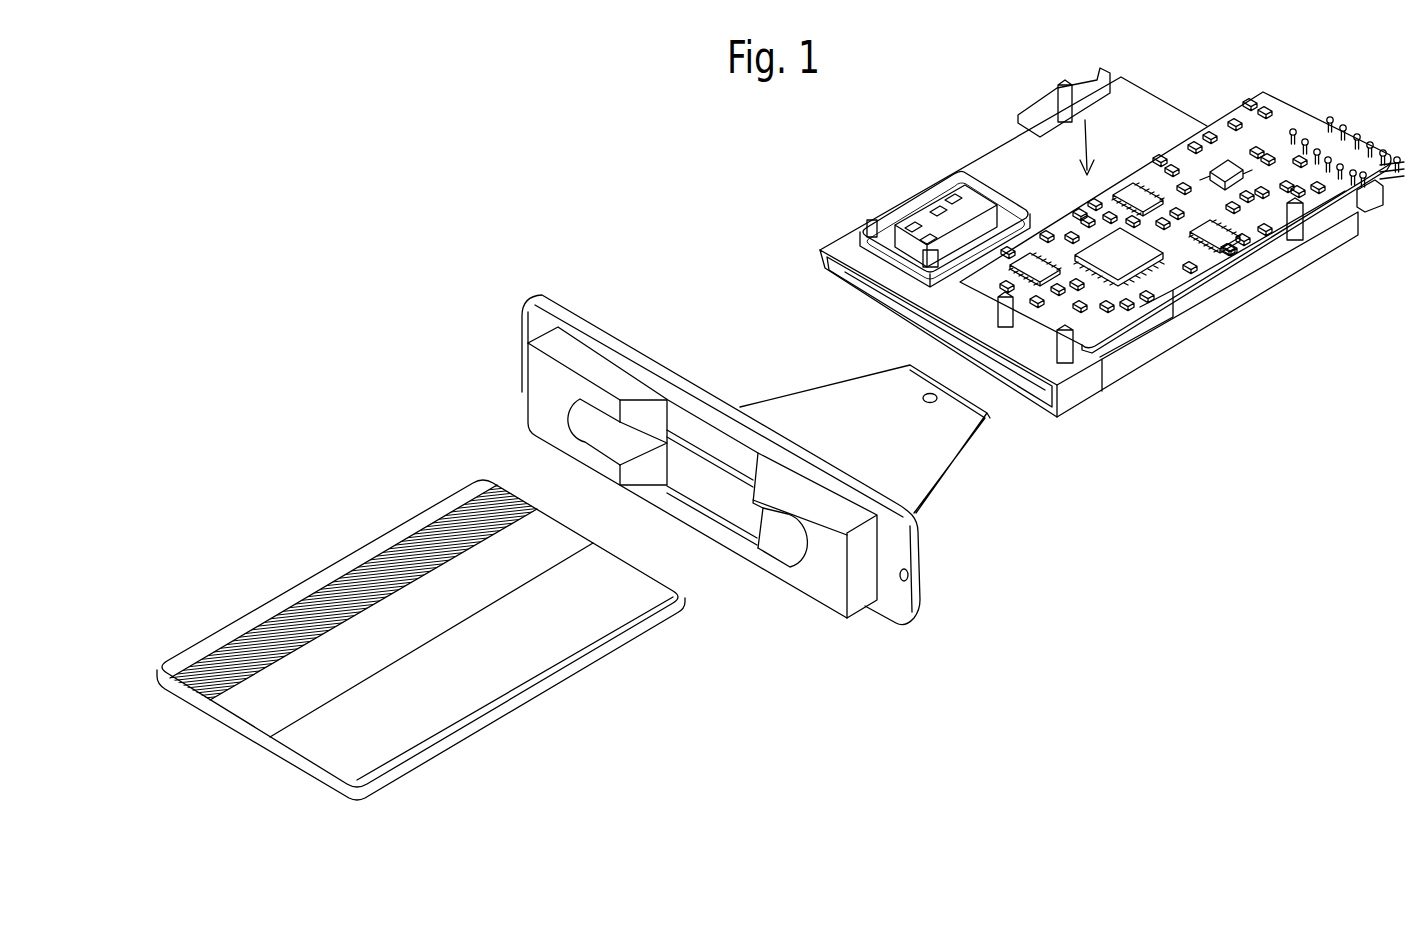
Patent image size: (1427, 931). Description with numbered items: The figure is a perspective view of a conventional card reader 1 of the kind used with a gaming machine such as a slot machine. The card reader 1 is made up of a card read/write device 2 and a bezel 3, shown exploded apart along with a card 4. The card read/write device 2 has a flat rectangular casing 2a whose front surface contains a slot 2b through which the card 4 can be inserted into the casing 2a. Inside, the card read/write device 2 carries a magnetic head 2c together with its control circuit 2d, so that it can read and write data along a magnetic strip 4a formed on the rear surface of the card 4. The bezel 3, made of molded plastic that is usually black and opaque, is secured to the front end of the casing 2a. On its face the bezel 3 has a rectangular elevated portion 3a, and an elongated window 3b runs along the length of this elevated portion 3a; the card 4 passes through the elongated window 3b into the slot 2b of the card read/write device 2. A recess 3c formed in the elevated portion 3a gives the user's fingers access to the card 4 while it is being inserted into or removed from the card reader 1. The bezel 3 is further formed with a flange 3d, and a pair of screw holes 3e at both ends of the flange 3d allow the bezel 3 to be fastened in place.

The card reader 1 is at (510, 219).
The card read/write device 2 is at (1048, 280).
The casing 2a is at (1085, 388).
The slot 2b is at (850, 292).
The magnetic head 2c is at (953, 200).
The control circuit 2d is at (1022, 121).
The bezel 3 is at (799, 512).
The elevated portion 3a is at (702, 496).
The elongated window 3b is at (732, 482).
The recess 3c is at (652, 417).
The flange 3d is at (799, 519).
The screw holes 3e is at (907, 573).
The card 4 is at (417, 616).
The magnetic strip 4a is at (337, 583).